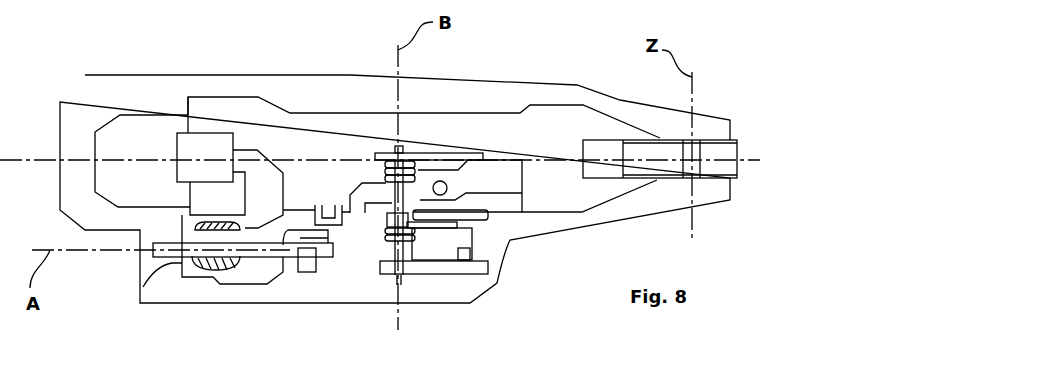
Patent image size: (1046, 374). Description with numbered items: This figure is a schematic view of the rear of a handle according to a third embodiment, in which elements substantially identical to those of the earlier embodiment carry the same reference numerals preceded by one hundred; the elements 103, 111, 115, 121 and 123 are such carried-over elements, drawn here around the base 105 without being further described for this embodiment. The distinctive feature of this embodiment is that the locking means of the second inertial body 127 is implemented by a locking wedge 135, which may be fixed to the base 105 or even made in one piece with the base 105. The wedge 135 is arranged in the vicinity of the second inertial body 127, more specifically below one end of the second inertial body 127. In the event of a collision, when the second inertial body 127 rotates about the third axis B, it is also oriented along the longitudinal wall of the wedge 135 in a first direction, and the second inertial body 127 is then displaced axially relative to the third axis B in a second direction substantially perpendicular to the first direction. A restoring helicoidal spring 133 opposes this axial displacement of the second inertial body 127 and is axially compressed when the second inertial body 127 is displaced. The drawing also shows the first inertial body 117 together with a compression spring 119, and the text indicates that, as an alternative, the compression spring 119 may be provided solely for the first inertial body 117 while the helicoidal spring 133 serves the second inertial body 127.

The housing 103 is at (285, 108).
The base 105 is at (452, 290).
The shaft 111 is at (143, 287).
The spring 115 is at (193, 268).
The first inertial body 117 is at (510, 178).
The compression spring 119 is at (385, 176).
The clip 121 is at (283, 245).
The block 123 is at (308, 263).
The second inertial body 127 is at (430, 250).
The restoring helicoidal spring 133 is at (390, 235).
The locking wedge 135 is at (465, 258).